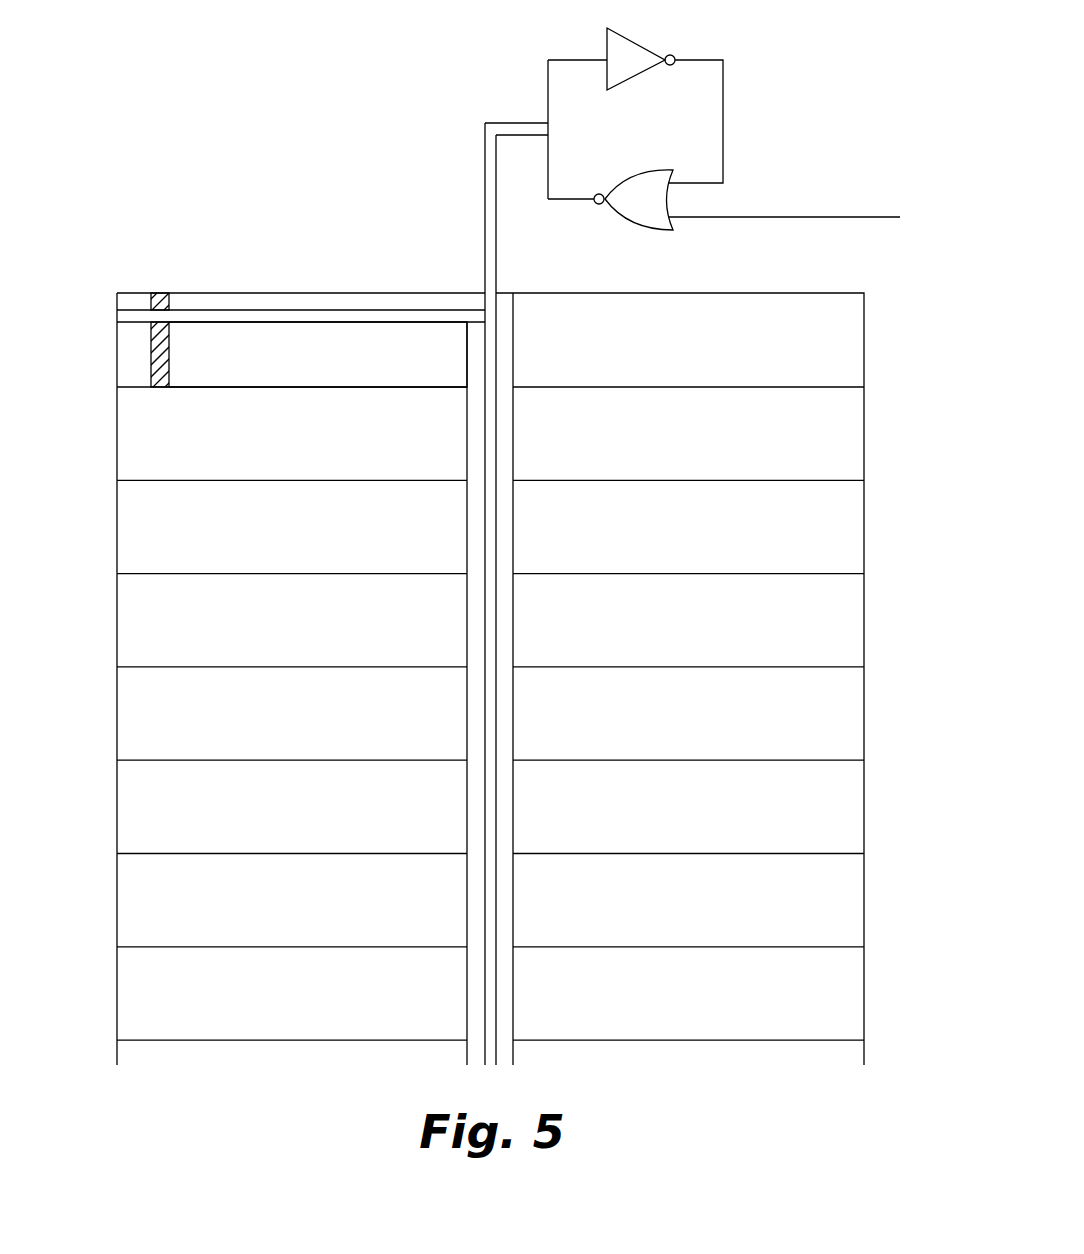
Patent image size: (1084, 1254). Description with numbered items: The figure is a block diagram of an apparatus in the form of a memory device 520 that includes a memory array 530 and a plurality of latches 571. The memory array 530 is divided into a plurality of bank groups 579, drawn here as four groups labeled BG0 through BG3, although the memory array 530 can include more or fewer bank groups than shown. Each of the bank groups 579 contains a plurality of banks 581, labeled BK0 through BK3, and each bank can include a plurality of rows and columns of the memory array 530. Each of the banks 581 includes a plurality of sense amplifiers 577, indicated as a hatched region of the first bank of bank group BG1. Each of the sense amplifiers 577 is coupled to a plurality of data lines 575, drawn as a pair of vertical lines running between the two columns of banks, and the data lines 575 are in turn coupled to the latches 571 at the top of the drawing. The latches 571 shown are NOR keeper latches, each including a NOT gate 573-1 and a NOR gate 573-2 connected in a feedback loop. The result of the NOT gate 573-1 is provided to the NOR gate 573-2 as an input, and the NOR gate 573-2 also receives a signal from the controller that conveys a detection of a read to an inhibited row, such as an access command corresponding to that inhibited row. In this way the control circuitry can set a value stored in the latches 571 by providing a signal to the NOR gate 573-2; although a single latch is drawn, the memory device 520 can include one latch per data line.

The memory device 520 is at (119, 180).
The memory array 530 is at (117, 530).
The latches 571 is at (754, 131).
The NOT gate 573-1 is at (632, 47).
The NOR gate 573-2 is at (640, 210).
The data lines 575 is at (487, 181).
The sense amplifiers 577 is at (160, 293).
The bank groups 579 is at (255, 353).
The banks 581 is at (333, 357).